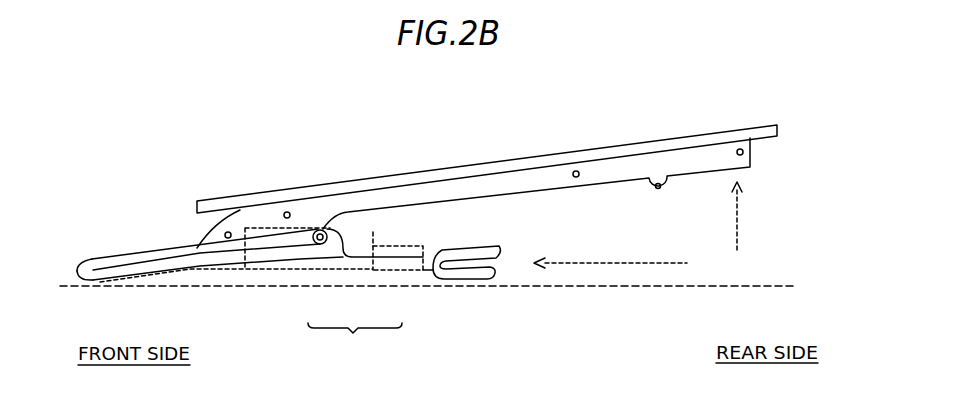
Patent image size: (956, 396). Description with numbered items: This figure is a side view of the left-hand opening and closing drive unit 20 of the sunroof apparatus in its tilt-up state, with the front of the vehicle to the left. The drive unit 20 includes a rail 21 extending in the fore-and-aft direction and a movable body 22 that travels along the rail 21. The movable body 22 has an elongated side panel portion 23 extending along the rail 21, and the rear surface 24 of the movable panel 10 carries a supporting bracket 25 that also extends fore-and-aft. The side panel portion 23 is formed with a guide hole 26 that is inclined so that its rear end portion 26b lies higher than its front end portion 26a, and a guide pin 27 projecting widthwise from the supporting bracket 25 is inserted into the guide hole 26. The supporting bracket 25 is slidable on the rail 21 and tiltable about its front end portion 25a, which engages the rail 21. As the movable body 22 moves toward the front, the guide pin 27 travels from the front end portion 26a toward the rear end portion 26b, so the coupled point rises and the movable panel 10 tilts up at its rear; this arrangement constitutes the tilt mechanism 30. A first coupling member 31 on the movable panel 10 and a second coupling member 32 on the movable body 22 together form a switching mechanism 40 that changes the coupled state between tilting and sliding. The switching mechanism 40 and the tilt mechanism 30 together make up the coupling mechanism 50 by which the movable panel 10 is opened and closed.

The movable panel 10 is at (496, 160).
The opening and closing drive unit 20 is at (145, 105).
The rail 21 is at (762, 285).
The movable body 22 is at (457, 250).
The side panel portion 23 is at (434, 280).
The rear surface 24 is at (642, 150).
The supporting bracket 25 is at (712, 172).
The front end portion 25a is at (84, 273).
The guide hole 26 is at (202, 268).
The front end portion 26a is at (103, 284).
The rear end portion 26b is at (326, 226).
The guide pin 27 is at (317, 230).
The tilt mechanism 30 is at (183, 215).
The first coupling member 31 is at (330, 289).
The second coupling member 32 is at (378, 289).
The switching mechanism 40 is at (355, 342).
The coupling mechanism 50 is at (468, 297).